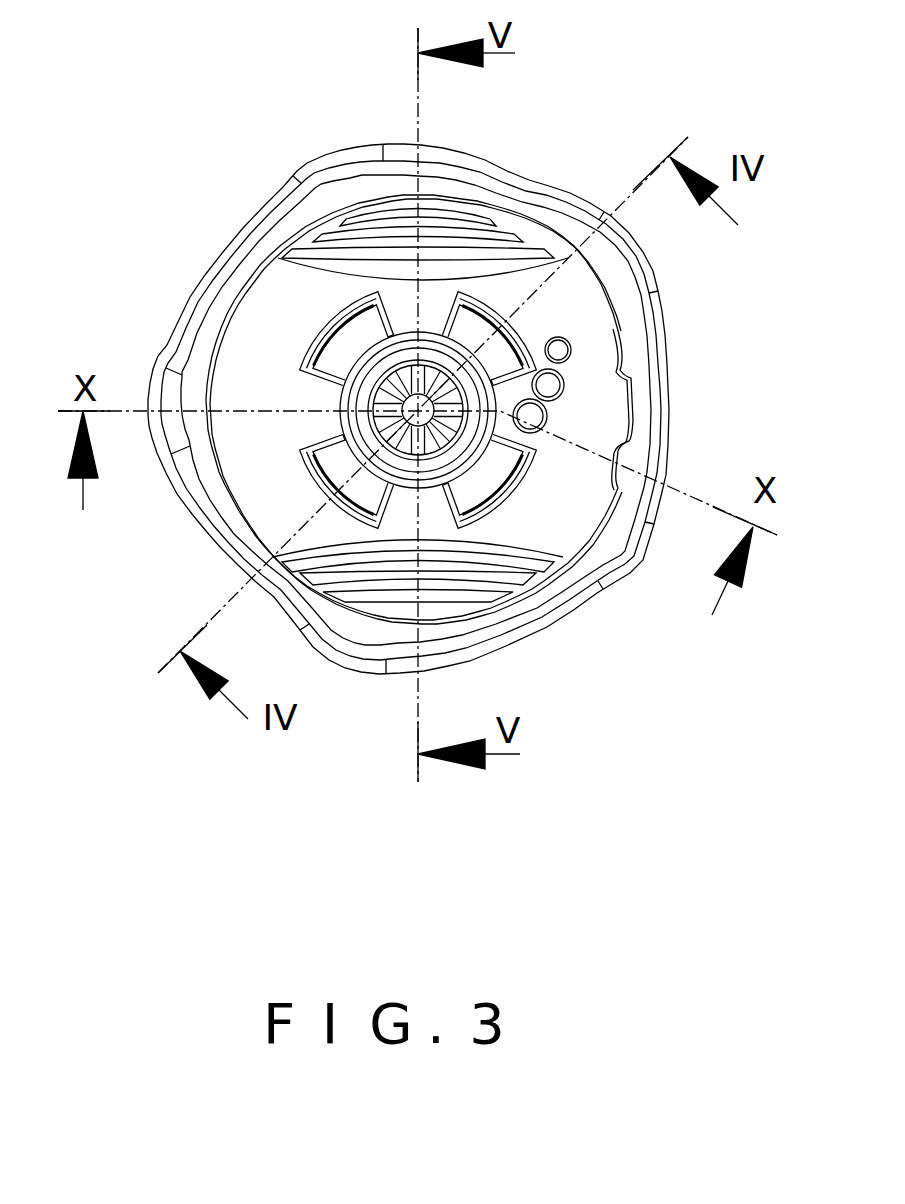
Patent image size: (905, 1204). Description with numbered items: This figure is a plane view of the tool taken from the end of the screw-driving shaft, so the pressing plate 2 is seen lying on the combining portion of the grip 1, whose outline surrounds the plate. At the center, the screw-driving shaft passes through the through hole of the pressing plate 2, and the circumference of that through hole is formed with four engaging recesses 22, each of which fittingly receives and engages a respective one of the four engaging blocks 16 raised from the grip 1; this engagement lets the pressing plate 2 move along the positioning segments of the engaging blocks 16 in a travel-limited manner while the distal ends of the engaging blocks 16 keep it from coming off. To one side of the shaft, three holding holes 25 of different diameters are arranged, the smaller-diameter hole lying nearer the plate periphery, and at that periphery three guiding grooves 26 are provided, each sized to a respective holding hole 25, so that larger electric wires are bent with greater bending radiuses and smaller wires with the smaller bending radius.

The grip 1 is at (308, 163).
The pressing plate 2 is at (252, 312).
The engaging block 16 is at (530, 362).
The engaging recess 22 is at (483, 303).
The holding hole 25 is at (551, 392).
The guiding groove 26 is at (626, 405).